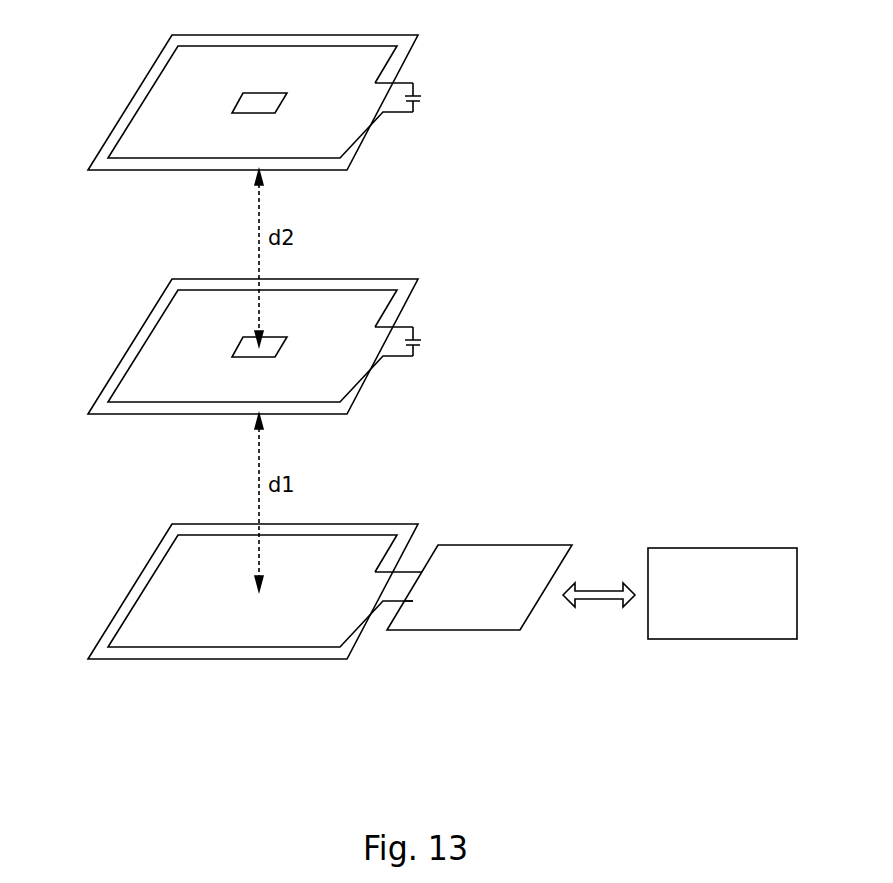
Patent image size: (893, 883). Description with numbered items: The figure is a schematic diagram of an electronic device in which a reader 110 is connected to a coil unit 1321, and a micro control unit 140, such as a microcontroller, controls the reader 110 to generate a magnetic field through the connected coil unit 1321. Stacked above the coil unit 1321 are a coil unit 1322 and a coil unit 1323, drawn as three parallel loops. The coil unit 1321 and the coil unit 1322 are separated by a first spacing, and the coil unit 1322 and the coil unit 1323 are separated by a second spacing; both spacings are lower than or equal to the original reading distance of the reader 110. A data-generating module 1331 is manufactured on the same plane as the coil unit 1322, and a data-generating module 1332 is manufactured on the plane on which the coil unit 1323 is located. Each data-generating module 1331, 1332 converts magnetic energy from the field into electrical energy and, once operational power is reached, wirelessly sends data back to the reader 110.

The coil unit 1323 is at (141, 85).
The coil unit 1322 is at (229, 346).
The coil unit 1321 is at (141, 574).
The data-generating module 1332 is at (283, 100).
The data-generating module 1331 is at (289, 352).
The reader 110 is at (452, 632).
The micro control unit 140 is at (721, 640).